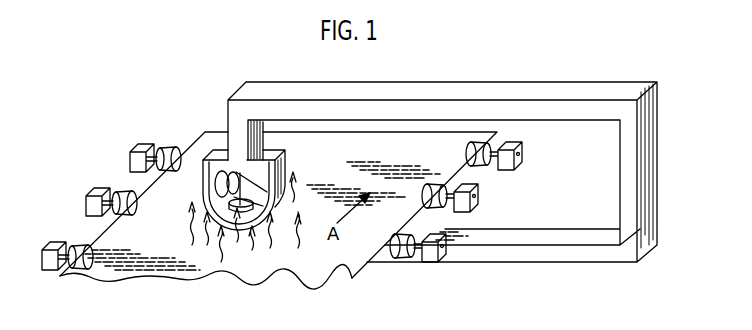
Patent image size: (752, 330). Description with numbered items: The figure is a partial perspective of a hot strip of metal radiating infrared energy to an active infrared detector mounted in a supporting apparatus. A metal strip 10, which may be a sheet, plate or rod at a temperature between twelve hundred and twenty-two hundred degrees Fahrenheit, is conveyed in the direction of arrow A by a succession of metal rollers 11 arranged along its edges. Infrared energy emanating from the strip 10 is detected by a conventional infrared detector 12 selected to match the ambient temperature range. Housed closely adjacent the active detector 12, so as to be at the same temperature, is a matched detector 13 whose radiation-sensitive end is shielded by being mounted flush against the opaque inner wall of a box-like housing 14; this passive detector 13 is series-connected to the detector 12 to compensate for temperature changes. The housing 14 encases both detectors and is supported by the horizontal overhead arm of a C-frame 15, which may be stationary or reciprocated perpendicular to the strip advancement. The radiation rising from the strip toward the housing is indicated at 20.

The metal strip 10 is at (314, 253).
The metal rollers 11 is at (391, 256).
The infrared detector 12 is at (240, 210).
The matched detector 13 is at (216, 180).
The box-like housing 14 is at (285, 162).
The C-frame 15 is at (413, 90).
The vapor / spray stream 20 is at (203, 215).